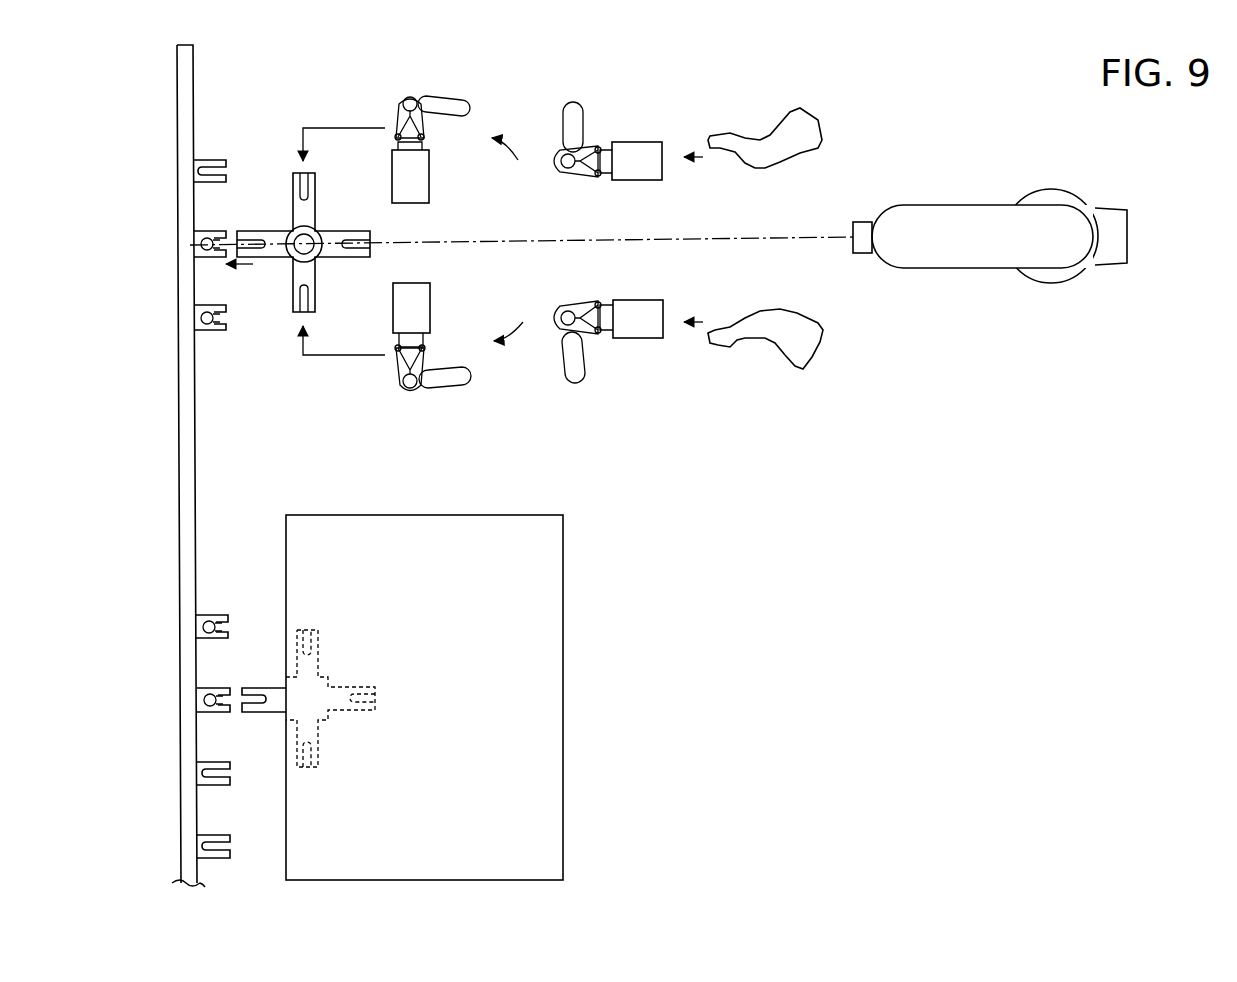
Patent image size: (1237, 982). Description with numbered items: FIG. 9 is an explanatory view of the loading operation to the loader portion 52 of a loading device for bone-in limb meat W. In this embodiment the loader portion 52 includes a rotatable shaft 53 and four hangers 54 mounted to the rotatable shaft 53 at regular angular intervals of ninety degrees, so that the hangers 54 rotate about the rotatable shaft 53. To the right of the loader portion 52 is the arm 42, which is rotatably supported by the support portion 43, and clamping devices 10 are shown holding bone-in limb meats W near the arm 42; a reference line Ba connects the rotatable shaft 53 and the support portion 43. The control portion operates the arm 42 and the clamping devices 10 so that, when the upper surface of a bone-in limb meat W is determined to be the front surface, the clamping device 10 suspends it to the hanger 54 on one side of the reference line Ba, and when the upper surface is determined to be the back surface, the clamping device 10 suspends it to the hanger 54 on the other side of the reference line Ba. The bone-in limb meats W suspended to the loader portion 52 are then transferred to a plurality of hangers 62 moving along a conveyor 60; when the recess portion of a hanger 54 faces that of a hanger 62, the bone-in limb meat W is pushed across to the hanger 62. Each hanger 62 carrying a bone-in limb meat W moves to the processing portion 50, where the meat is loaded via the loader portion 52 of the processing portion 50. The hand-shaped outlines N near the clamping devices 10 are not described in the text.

The clamping device 10 is at (632, 141).
The arm 42 is at (942, 257).
The support portion 43 is at (1055, 278).
The processing portion 50 is at (563, 617).
The loader portion 52 is at (281, 162).
The rotatable shaft 53 is at (292, 264).
The hanger 54 is at (245, 233).
The conveyor 60 is at (182, 490).
The hanger 62 is at (203, 325).
The bone-in limb meat W is at (567, 115).
The worker hand N is at (770, 168).
The reference line Ba is at (808, 237).